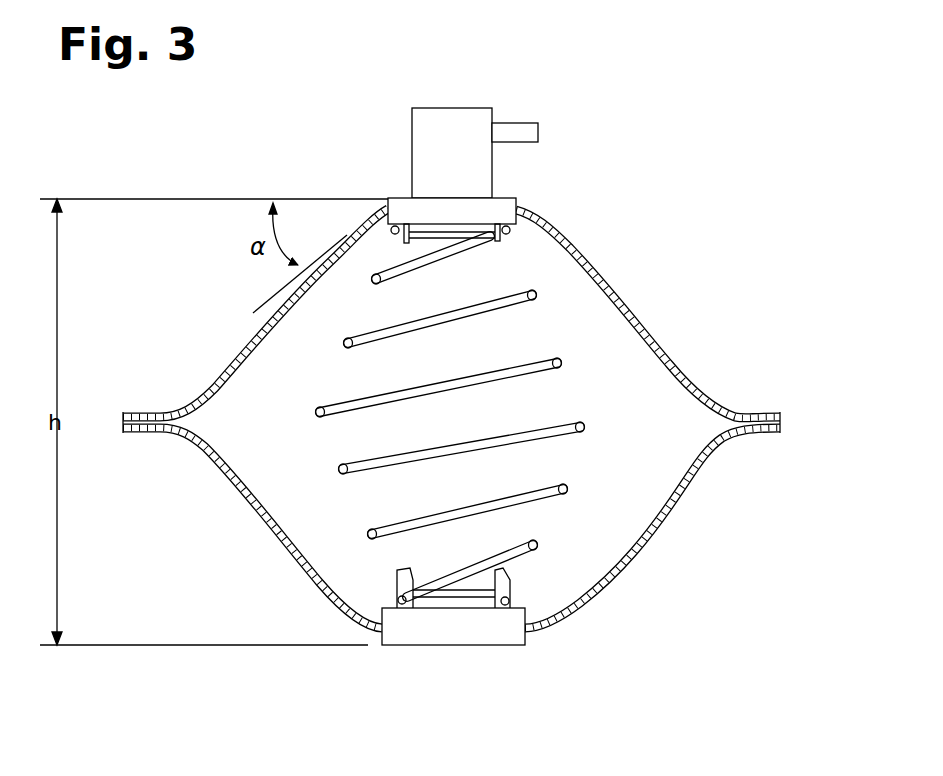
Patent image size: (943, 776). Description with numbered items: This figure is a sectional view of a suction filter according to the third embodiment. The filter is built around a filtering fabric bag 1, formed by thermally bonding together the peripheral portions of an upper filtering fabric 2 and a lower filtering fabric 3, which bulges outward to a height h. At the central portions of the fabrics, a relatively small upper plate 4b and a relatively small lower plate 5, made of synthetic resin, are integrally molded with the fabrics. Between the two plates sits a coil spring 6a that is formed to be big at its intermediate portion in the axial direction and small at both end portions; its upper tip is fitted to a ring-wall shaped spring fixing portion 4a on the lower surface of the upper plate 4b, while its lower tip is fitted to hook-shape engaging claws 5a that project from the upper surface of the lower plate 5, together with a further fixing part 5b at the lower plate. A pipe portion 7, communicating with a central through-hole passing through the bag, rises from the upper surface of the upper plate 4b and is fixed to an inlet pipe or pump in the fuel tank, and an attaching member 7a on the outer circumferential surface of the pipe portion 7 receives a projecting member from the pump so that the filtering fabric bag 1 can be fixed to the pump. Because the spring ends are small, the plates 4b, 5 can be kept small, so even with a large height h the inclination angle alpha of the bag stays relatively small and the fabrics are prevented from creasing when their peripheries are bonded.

The filtering fabric bag 1 is at (451, 413).
The upper filtering fabric 2 is at (662, 353).
The lower filtering fabric 3 is at (687, 484).
The spring fixing portion 4a is at (478, 217).
The upper plate 4b is at (427, 217).
The lower plate 5 is at (480, 632).
The hook-shape engaging claws 5a is at (503, 583).
The lower left clamp tab 5b is at (420, 595).
The coil spring 6a is at (338, 418).
The pipe portion 7 is at (448, 128).
The attaching member 7a is at (527, 133).